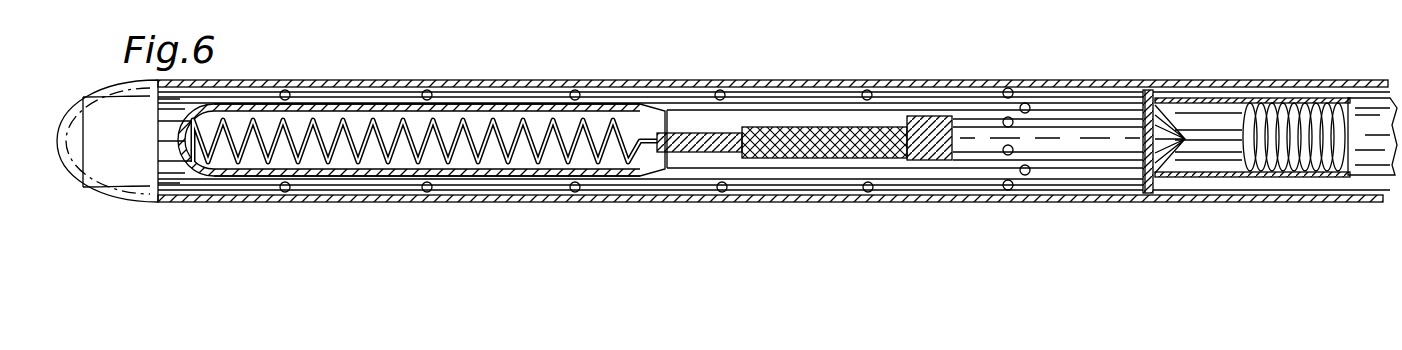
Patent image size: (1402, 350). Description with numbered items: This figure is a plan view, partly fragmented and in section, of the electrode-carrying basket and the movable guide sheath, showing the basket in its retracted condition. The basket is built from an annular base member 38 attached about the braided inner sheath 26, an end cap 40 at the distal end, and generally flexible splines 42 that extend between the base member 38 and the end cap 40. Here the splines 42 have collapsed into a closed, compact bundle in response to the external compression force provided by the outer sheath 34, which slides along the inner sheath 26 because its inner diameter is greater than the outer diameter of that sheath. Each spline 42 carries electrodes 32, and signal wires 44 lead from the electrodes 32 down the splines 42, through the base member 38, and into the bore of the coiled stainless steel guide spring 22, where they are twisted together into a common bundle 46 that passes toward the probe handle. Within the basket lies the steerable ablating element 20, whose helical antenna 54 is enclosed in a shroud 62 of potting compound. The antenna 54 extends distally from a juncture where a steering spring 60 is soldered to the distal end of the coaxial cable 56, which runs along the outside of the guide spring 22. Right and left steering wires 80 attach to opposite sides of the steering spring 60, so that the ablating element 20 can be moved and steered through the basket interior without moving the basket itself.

The steerable ablating element 20 is at (326, 66).
The outer sheath 34 is at (689, 80).
The end cap 40 is at (132, 140).
The shroud 62 is at (318, 178).
The antenna 54 is at (392, 126).
The steering spring 60 is at (818, 124).
The coaxial cable 56 is at (937, 160).
The braided sheath 26 is at (1368, 184).
The electrodes 32 is at (1000, 118).
The splines 42 is at (1053, 120).
The annular base member 38 is at (1144, 88).
The signal wires 44 is at (1165, 160).
The common bundle 46 is at (1226, 140).
The steering wires 80 is at (1205, 130).
The spring 22 is at (1293, 152).